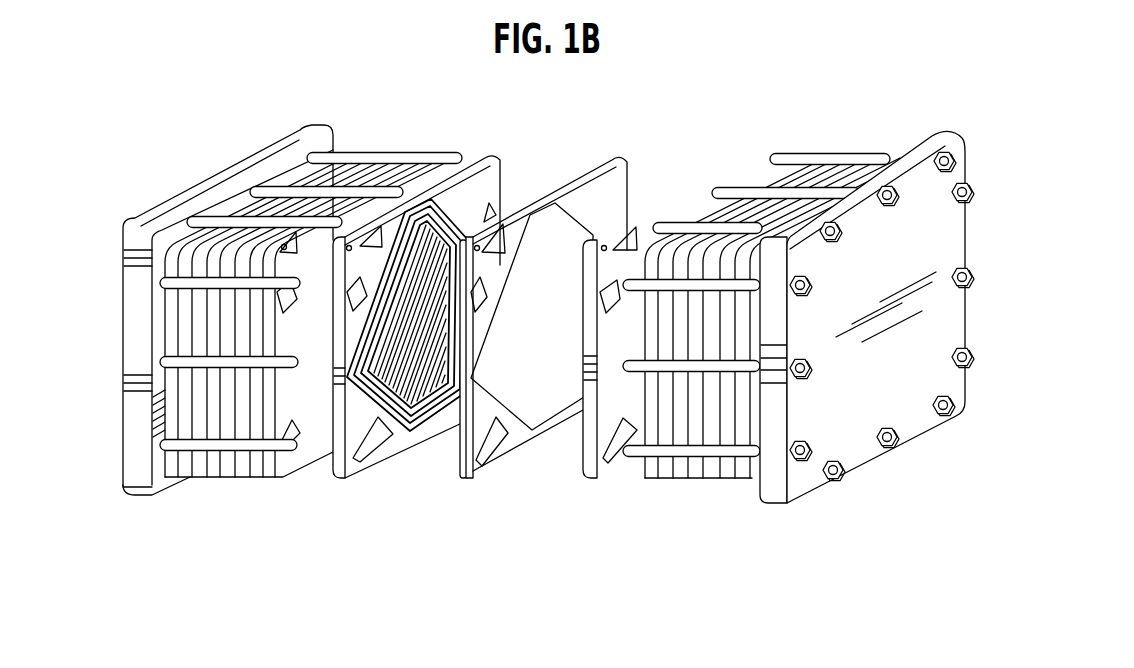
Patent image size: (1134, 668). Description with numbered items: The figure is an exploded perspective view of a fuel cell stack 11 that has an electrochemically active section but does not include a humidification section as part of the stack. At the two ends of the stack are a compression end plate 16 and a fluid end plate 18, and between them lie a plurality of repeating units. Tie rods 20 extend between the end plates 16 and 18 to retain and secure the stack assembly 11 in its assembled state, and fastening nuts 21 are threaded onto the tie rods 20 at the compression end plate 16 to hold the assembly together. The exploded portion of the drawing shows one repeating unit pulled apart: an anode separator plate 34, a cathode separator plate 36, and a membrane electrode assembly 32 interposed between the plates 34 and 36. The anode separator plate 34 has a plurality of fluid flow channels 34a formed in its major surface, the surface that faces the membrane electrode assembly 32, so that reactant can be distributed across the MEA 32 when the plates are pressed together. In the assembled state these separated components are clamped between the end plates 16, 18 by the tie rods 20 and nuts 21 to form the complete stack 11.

The fuel cell stack 11 is at (548, 344).
The compression end plate 16 is at (913, 173).
The fluid end plate 18 is at (300, 130).
The tie rods 20 is at (800, 158).
The fastening nuts 21 is at (933, 417).
The membrane electrode assembly 32 is at (470, 433).
The anode separator plate 34 is at (431, 313).
The fluid flow channels 34a is at (425, 430).
The cathode separator plate 36 is at (620, 157).